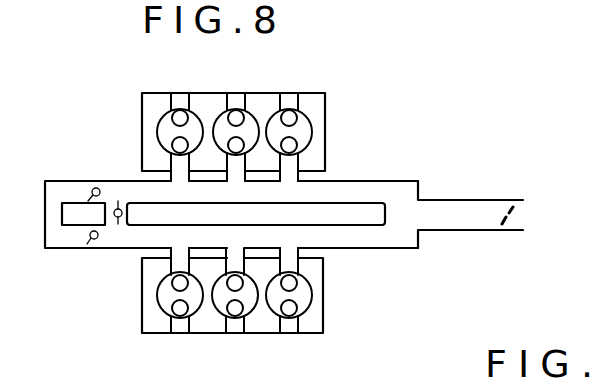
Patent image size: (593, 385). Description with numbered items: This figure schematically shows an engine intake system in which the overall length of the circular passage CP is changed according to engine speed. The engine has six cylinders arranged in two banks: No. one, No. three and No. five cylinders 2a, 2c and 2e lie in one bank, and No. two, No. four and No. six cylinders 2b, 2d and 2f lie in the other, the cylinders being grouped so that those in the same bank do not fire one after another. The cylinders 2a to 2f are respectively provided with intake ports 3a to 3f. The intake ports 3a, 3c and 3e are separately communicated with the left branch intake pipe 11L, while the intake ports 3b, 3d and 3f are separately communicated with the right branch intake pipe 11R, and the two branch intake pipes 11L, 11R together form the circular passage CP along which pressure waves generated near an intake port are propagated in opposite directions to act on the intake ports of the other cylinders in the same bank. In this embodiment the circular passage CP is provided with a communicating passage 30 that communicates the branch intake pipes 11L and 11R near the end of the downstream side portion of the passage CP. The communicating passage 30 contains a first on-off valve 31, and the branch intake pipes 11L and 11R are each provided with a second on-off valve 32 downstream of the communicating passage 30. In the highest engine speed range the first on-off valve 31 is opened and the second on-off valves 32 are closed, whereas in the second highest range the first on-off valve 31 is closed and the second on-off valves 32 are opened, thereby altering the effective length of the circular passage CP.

The No. 1 cylinder 2a is at (162, 140).
The No. 2 cylinder 2b is at (152, 290).
The No. 3 cylinder 2c is at (253, 116).
The No. 4 cylinder 2d is at (216, 320).
The No. 5 cylinder 2e is at (310, 126).
The No. 6 cylinder 2f is at (314, 290).
The intake port 3a is at (176, 111).
The intake port 3b is at (174, 318).
The intake port 3c is at (231, 111).
The intake port 3d is at (246, 318).
The intake port 3e is at (293, 111).
The intake port 3f is at (300, 318).
The communicating passage 30 is at (137, 213).
The first on-off valve 31 is at (118, 201).
The second on-off valves 32 is at (91, 232).
The left branch intake pipe 11L is at (348, 193).
The right branch intake pipe 11R is at (403, 249).
The circular passage CP is at (284, 205).